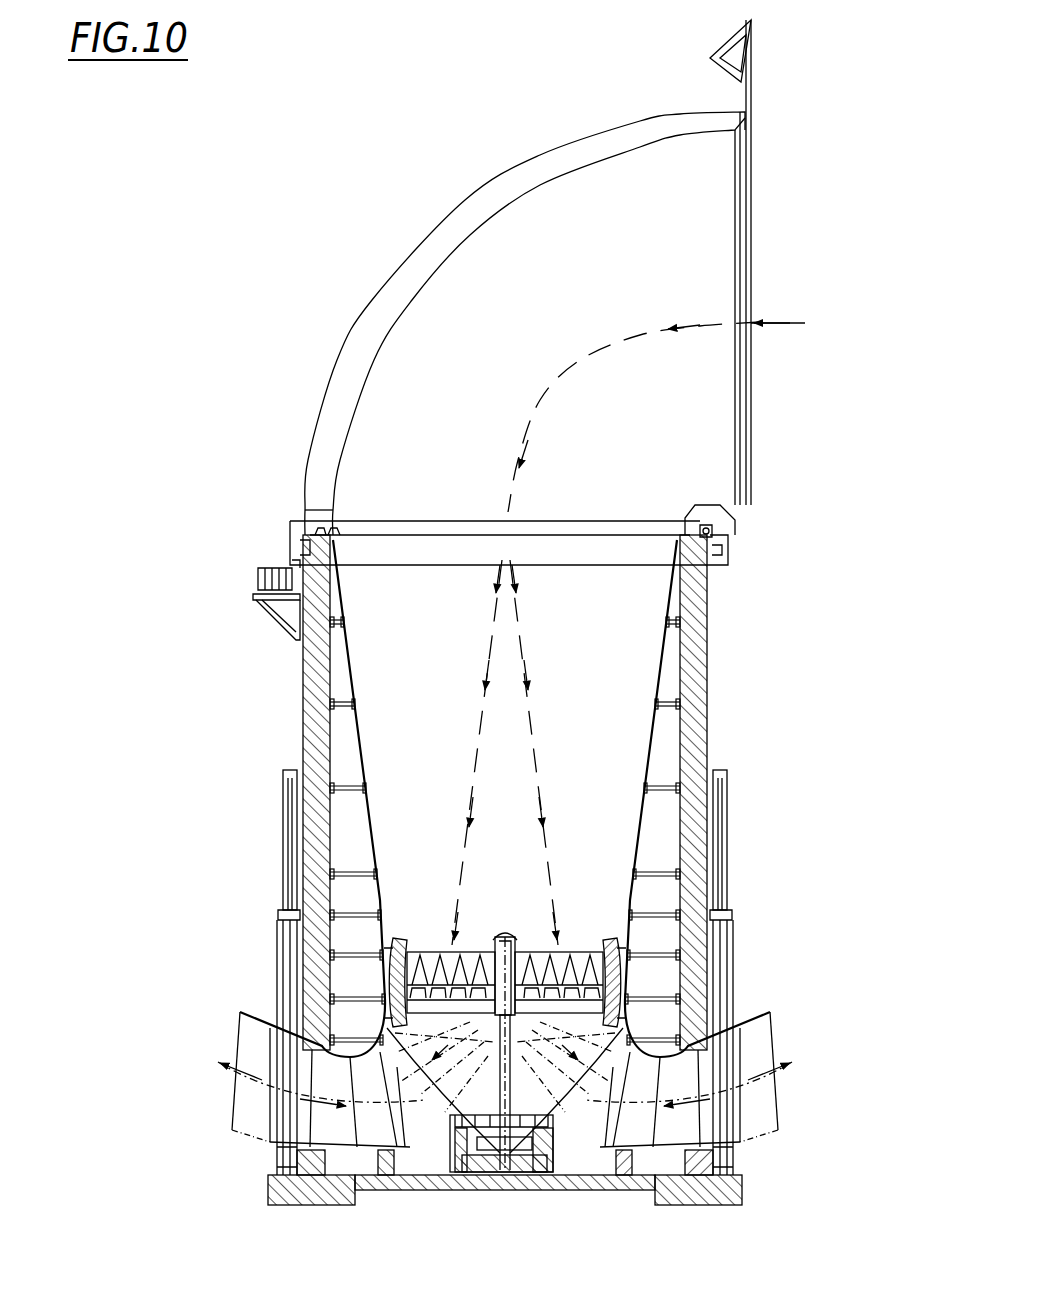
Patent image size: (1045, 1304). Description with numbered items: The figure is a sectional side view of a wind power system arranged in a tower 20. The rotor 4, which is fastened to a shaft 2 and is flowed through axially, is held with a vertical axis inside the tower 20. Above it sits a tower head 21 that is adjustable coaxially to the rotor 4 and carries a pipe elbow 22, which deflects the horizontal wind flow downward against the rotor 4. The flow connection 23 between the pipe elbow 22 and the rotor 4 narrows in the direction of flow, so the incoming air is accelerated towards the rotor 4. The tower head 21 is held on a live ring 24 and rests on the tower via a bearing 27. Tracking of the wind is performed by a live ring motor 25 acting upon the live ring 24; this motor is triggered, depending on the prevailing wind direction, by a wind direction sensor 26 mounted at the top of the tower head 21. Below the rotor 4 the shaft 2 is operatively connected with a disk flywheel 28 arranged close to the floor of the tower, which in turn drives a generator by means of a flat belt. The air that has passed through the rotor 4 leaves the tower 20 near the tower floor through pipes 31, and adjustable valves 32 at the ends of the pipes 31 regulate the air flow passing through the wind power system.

The shaft 2 is at (504, 1062).
The rotor 4 is at (510, 937).
The tower 20 is at (706, 655).
The tower head 21 is at (740, 370).
The pipe elbow 22 is at (512, 183).
The flow connection 23 is at (650, 745).
The live ring 24 is at (730, 557).
The live ring motor 25 is at (262, 573).
The wind direction sensor 26 is at (712, 50).
The bearing 27 is at (703, 526).
The disk flywheel 28 is at (520, 1143).
The pipes 31 is at (583, 1067).
The adjustable valves 32 is at (728, 938).